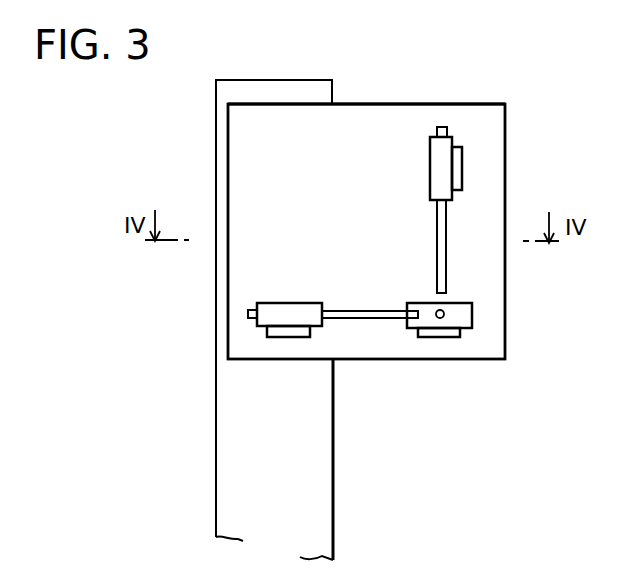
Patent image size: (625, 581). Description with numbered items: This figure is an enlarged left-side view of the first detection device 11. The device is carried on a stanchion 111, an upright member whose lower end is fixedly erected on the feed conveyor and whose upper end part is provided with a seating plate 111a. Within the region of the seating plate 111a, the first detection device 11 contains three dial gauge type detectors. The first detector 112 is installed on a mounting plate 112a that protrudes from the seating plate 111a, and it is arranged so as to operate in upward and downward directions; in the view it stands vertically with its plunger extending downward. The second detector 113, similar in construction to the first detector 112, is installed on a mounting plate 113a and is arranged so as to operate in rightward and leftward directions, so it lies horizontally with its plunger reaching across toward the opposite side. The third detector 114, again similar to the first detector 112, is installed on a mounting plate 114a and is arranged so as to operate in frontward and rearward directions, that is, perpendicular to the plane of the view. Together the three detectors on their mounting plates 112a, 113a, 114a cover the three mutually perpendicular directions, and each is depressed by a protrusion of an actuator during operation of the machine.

The first detection device 11 is at (342, 362).
The stanchion 111 is at (215, 470).
The seating plate 111a is at (455, 104).
The first detector 112 is at (430, 172).
The mounting plate 112a is at (462, 165).
The second detector 113 is at (290, 303).
The mounting plate 113a is at (285, 338).
The third detector 114 is at (472, 308).
The mounting plate 114a is at (445, 338).